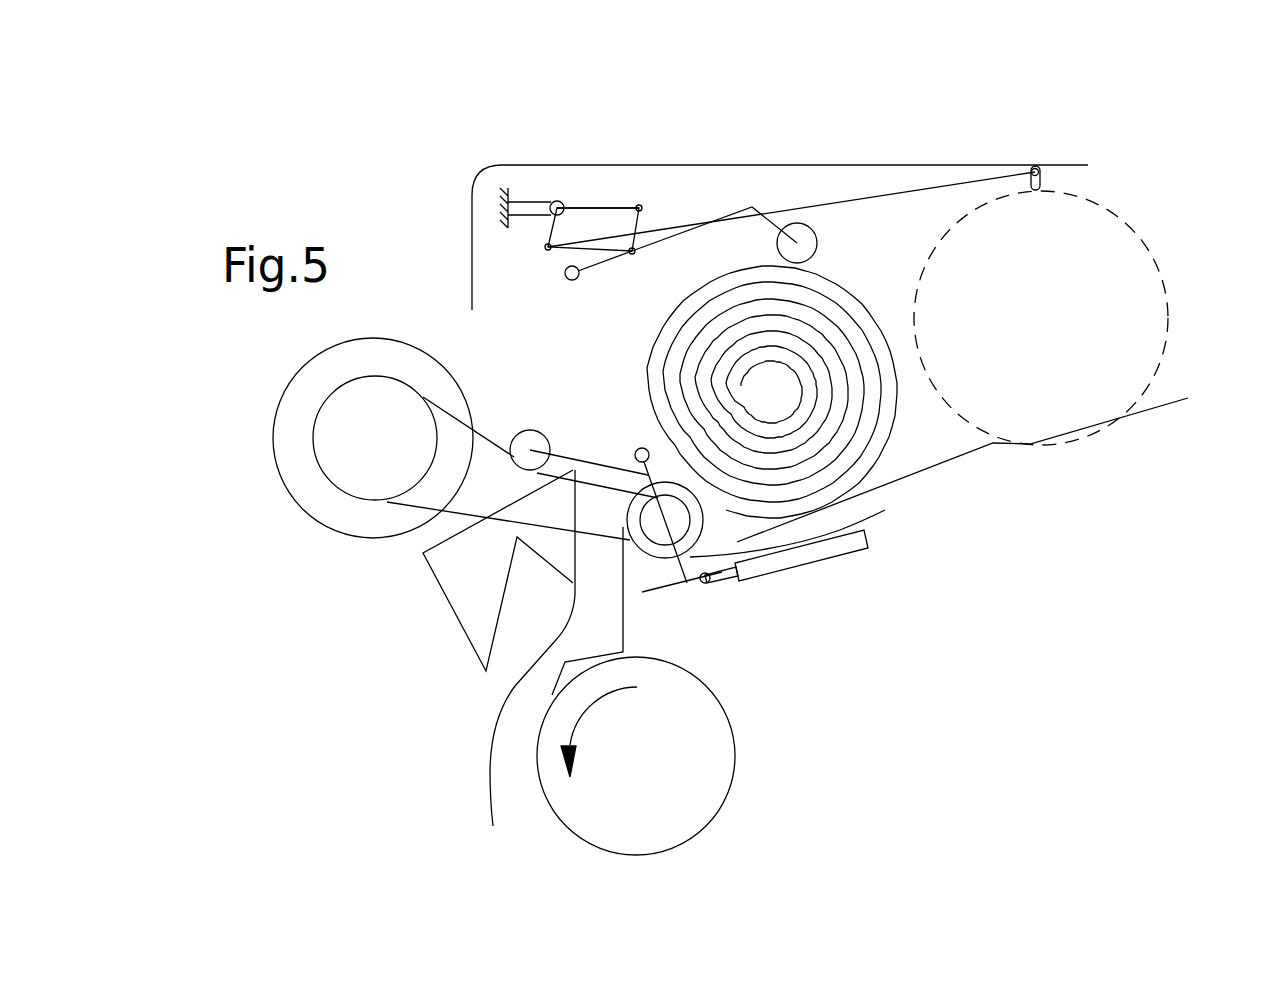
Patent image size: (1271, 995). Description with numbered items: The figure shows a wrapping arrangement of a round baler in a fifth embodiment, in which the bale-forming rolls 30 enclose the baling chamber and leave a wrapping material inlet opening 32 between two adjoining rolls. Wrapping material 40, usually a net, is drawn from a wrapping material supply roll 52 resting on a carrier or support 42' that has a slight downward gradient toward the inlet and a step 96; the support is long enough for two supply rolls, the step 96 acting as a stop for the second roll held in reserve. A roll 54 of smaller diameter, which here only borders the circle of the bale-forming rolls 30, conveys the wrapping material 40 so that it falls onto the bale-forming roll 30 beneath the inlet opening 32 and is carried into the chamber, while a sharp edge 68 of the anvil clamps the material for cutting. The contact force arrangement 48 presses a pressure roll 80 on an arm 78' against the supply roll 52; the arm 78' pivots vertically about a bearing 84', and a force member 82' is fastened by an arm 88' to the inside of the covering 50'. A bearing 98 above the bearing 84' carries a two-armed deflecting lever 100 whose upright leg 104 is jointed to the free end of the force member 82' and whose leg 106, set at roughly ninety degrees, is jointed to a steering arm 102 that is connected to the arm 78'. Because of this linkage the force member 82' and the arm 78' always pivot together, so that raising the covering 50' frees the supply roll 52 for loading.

The bale-forming roll 30 is at (357, 540).
The wrapping material inlet opening 32 is at (455, 722).
The wrapping material 40 is at (627, 628).
The carrier or support 42' is at (962, 482).
The contact force arrangement 48 is at (829, 169).
The covering 50' is at (514, 194).
The wrapping material supply roll 52 is at (790, 421).
The roll 54 is at (885, 510).
The sharp edge 68 is at (526, 733).
The arm 78' is at (687, 280).
The pressure roll 80 is at (817, 248).
The force member 82' is at (791, 215).
The bearing 84' is at (557, 314).
The arm 88' is at (1120, 186).
The step 96 is at (1028, 445).
The bearing 98 is at (555, 201).
The deflecting lever 100 is at (638, 193).
The steering arm 102 is at (660, 219).
The leg 104 is at (545, 243).
The leg 106 is at (598, 207).